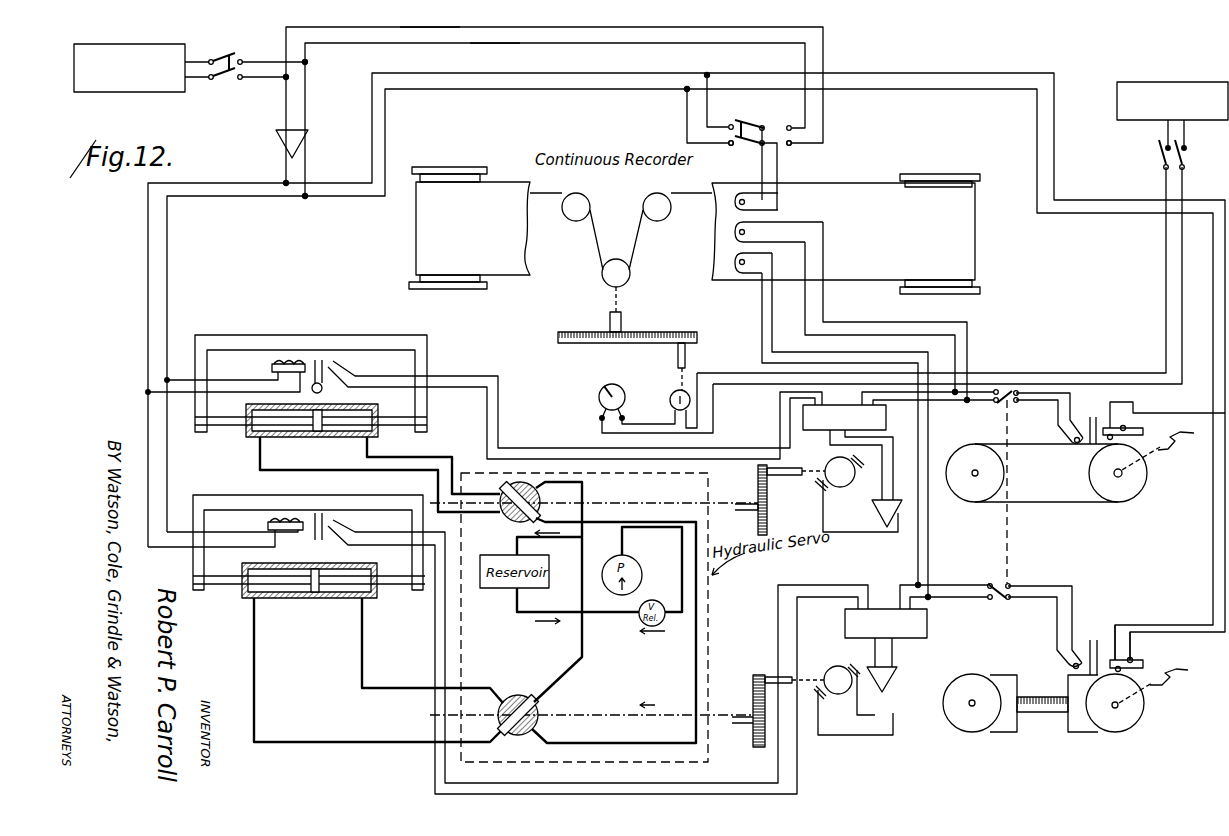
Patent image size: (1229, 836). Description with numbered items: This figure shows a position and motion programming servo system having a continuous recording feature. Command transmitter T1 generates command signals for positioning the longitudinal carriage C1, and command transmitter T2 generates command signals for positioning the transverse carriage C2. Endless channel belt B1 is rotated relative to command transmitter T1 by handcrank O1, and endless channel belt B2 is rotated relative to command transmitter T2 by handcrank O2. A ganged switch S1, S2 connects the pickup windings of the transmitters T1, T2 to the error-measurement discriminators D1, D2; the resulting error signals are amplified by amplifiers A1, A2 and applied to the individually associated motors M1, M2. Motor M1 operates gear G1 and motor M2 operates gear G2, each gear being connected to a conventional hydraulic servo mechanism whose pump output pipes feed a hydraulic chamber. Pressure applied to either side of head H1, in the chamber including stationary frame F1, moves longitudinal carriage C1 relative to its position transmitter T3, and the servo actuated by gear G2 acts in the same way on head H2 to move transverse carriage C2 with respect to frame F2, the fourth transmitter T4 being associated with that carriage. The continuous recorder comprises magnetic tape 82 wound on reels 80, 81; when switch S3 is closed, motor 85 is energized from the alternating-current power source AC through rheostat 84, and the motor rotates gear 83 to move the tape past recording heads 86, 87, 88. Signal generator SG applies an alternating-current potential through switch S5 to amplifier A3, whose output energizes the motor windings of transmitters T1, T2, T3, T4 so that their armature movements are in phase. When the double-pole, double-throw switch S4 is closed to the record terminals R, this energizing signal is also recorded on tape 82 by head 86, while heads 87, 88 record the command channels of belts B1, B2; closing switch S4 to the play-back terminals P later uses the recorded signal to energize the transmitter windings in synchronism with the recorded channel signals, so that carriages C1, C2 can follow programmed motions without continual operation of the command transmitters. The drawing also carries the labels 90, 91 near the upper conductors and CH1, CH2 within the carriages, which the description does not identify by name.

The signal generator SG is at (131, 93).
The switch S5 is at (221, 58).
The conductor 90 is at (447, 30).
The conductor 91 is at (489, 44).
The amplifier A3 is at (283, 139).
The double-pole, double-throw switch S4 is at (751, 119).
The record terminals R is at (736, 149).
The play-back terminals P is at (788, 151).
The alternating-current power source AC is at (1168, 82).
The switch S3 is at (1186, 150).
The reel 80 is at (459, 288).
The reel 81 is at (978, 291).
The magnetic tape 82 is at (515, 188).
The recording head 86 is at (752, 204).
The recording head 87 is at (738, 233).
The recording head 88 is at (737, 262).
The gear 83 is at (574, 333).
The rheostat 84 is at (603, 393).
The motor 85 is at (673, 396).
The longitudinal carriage C1 is at (203, 335).
The carriage coil CH1 is at (225, 378).
The position transmitter T3 is at (567, 409).
The stationary frame F1 is at (373, 406).
The head H1 is at (315, 438).
The transverse carriage C2 is at (206, 495).
The carriage coil CH2 is at (222, 530).
The transmitter T4 is at (300, 543).
The frame F2 is at (372, 570).
The head H2 is at (313, 600).
The gear G1 is at (757, 490).
The motor M1 is at (856, 481).
The amplifier A1 is at (898, 507).
The error-measurement discriminator D1 is at (890, 415).
The ganged switch S1 is at (997, 401).
The endless channel belt B1 is at (1028, 447).
The command transmitter T1 is at (1097, 415).
The handcrank O1 is at (1158, 453).
The ganged switch S2 is at (1001, 583).
The error-measurement discriminator D2 is at (930, 621).
The motor M2 is at (829, 670).
The amplifier A2 is at (876, 702).
The gear G2 is at (755, 677).
The endless channel belt B2 is at (993, 675).
The command transmitter T2 is at (1097, 640).
The handcrank O2 is at (1177, 672).